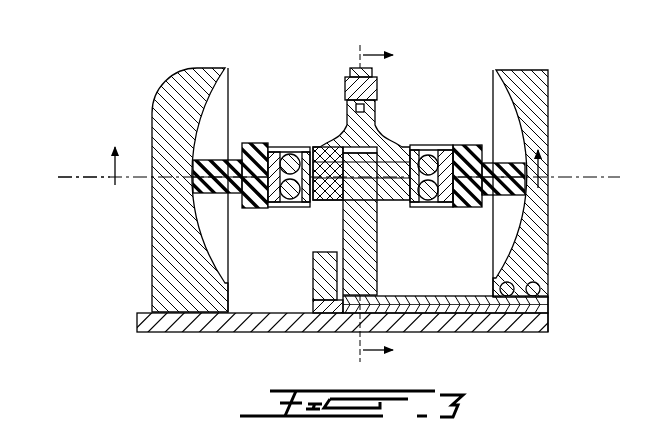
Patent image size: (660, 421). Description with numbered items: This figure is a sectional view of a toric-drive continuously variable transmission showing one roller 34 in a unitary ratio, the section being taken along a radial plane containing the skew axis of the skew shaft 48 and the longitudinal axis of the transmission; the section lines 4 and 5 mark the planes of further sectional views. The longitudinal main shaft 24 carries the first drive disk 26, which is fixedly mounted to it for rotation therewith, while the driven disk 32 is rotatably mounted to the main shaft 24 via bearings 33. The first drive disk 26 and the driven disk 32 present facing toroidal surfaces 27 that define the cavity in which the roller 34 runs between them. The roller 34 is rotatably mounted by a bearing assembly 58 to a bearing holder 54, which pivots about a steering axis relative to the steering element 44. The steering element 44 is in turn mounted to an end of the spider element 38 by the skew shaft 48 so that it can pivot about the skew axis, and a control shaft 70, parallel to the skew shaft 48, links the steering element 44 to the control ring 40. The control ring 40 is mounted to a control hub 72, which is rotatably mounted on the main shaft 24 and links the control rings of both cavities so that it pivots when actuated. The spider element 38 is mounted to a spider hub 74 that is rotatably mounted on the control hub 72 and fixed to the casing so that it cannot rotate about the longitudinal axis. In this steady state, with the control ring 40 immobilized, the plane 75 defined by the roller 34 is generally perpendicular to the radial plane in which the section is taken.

The section line 4- 4 is at (364, 203).
The section line 5- 5 is at (562, 190).
The longitudinal main shaft 24 is at (137, 322).
The first drive disk 26 is at (178, 88).
The toroidal surface 27 is at (222, 106).
The driven disk 32 is at (523, 82).
The bearings 33 is at (540, 292).
The roller 34 is at (253, 145).
The spider element 38 is at (370, 240).
The control ring 40 is at (313, 277).
The steering element 44 is at (372, 132).
The skew shaft 48 is at (326, 165).
The bearing holder 54 is at (413, 150).
The bearing assembly 58 is at (282, 146).
The control shaft 70 is at (378, 93).
The control hub 72 is at (305, 303).
The spider hub 74 is at (457, 296).
The plane defined by the roller 75 is at (92, 174).